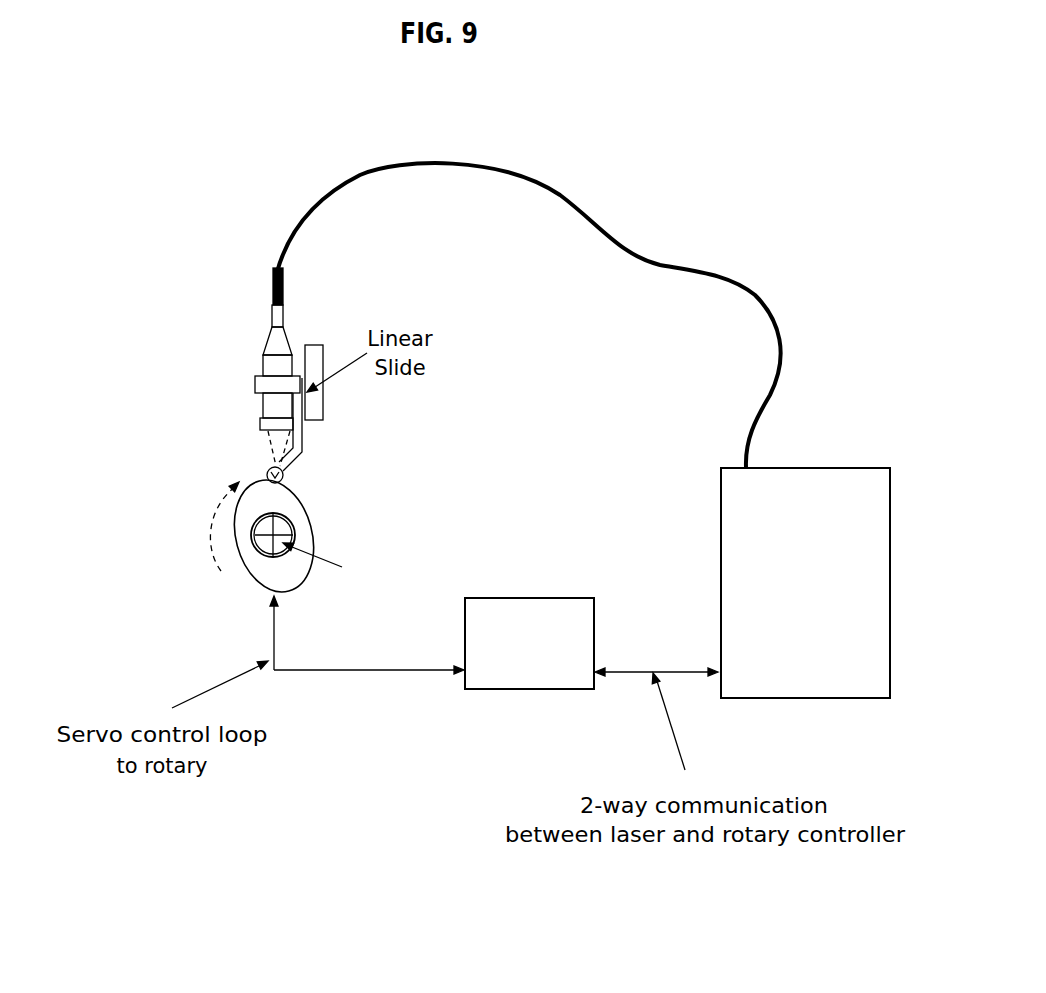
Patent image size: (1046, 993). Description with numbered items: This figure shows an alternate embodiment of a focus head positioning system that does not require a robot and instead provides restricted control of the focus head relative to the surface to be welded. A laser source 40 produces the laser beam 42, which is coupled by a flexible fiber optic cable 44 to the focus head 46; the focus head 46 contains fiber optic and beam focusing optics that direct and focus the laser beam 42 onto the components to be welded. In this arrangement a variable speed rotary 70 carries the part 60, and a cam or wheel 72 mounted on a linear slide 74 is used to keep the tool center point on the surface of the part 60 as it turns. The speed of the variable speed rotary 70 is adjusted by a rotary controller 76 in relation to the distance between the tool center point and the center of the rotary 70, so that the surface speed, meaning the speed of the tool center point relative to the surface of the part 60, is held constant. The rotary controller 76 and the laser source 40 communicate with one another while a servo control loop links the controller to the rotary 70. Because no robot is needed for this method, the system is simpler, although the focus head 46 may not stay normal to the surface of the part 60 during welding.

The laser source 40 is at (823, 634).
The laser beam 42 is at (268, 443).
The flexible fiber optic cable 44 is at (700, 275).
The focus head 46 is at (267, 400).
The part 60 is at (293, 592).
The variable speed rotary 70 is at (213, 560).
The cam or wheel 72 is at (287, 475).
The linear slide 74 is at (300, 433).
The rotary controller 76 is at (538, 689).